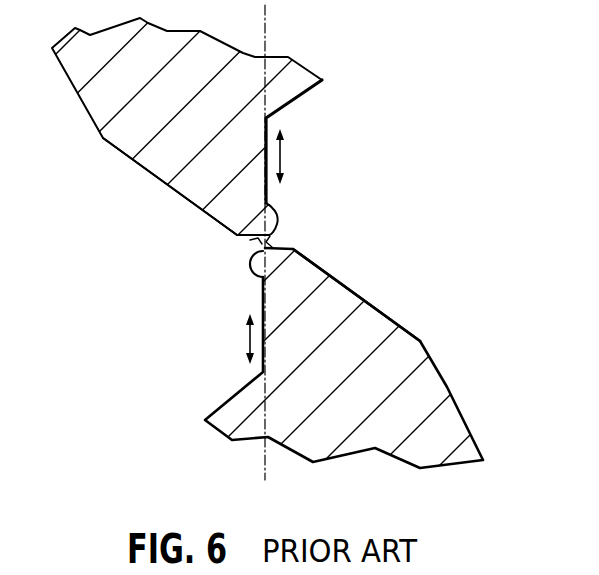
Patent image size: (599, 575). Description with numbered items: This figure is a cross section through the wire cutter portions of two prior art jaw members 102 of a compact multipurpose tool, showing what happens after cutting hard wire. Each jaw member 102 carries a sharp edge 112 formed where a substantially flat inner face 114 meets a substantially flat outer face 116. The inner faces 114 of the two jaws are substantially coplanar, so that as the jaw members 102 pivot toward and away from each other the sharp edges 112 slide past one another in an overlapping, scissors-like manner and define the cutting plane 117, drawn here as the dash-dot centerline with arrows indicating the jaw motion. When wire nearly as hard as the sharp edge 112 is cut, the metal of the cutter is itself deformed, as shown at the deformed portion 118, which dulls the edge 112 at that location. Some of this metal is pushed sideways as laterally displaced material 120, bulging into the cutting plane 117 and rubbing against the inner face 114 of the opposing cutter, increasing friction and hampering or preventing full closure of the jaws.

The jaw member 102 is at (308, 92).
The sharp edge 112 is at (270, 235).
The inner face 114 is at (267, 197).
The outer face 116 is at (155, 178).
The cutting plane 117 is at (272, 17).
The deformed portion 118 is at (250, 240).
The laterally displaced material 120 is at (280, 222).